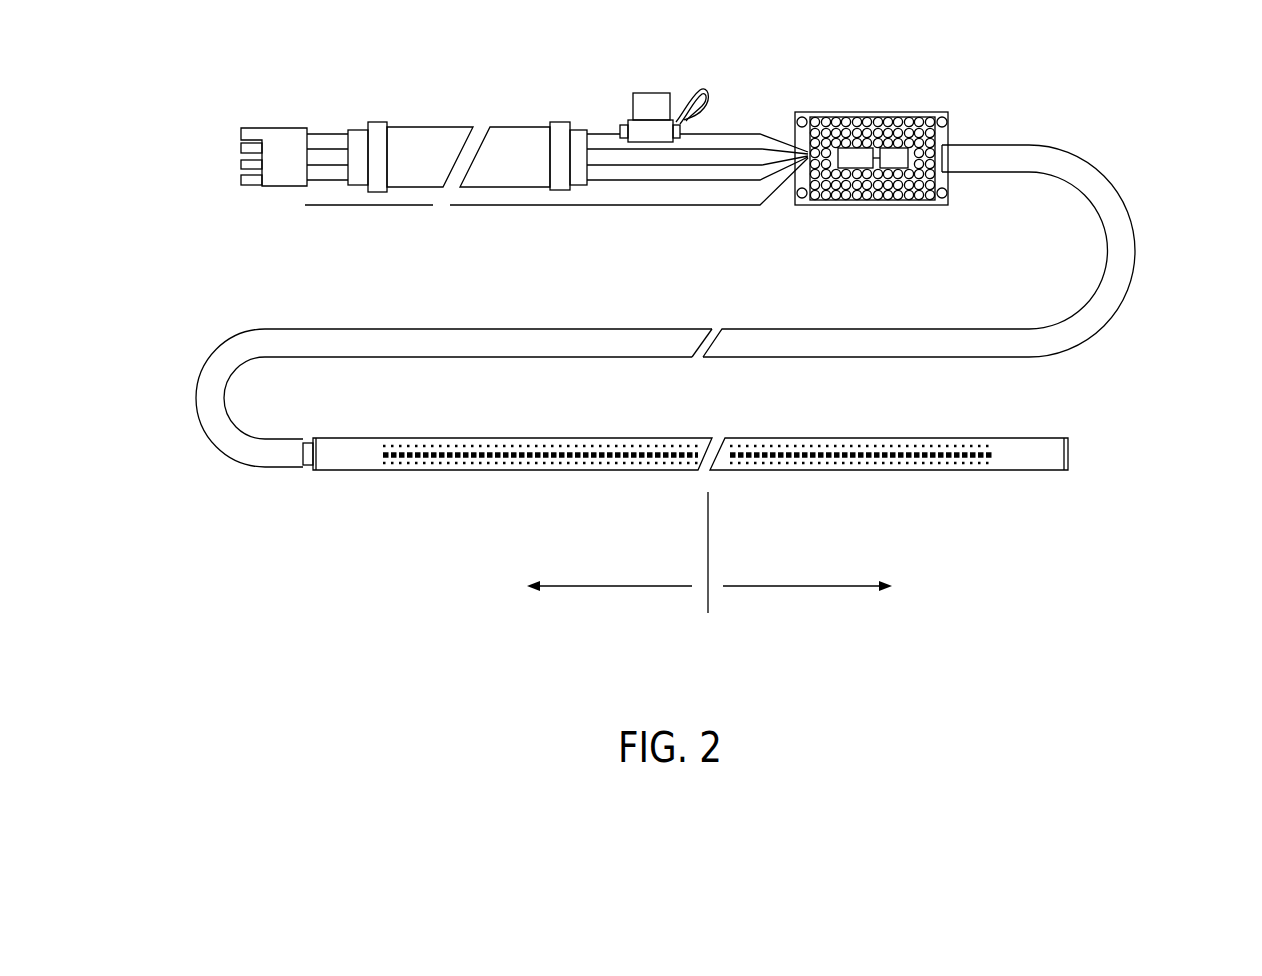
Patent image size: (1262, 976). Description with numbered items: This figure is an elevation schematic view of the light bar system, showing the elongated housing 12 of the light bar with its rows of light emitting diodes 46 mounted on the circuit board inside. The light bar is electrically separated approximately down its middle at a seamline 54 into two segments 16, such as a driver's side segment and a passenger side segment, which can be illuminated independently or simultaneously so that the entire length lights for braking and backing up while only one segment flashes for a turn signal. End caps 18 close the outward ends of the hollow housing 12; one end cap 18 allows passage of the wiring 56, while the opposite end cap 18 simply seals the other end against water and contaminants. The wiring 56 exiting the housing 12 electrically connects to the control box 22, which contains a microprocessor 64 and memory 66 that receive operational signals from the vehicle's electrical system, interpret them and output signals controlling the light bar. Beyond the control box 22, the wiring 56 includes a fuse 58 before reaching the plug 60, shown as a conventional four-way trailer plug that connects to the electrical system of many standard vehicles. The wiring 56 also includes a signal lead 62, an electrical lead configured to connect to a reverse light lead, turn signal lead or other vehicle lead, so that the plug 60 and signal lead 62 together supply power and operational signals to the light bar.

The housing 12 is at (500, 431).
The segments 16 is at (710, 587).
The end caps 18 is at (303, 473).
The control box 22 is at (870, 112).
The light emitting diodes 46 is at (553, 458).
The seamline 54 is at (727, 550).
The wiring 56 is at (728, 134).
The fuse 58 is at (650, 93).
The plug 60 is at (272, 128).
The signal lead 62 is at (368, 206).
The microprocessor 64 is at (858, 168).
The memory 66 is at (893, 168).